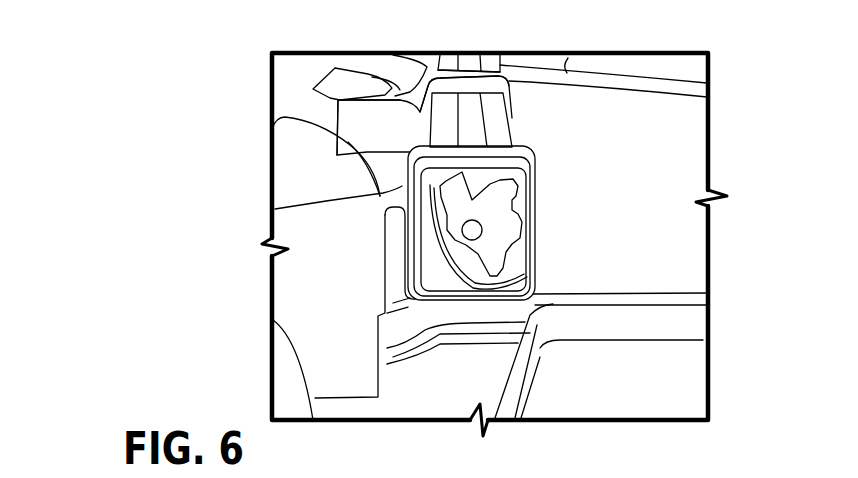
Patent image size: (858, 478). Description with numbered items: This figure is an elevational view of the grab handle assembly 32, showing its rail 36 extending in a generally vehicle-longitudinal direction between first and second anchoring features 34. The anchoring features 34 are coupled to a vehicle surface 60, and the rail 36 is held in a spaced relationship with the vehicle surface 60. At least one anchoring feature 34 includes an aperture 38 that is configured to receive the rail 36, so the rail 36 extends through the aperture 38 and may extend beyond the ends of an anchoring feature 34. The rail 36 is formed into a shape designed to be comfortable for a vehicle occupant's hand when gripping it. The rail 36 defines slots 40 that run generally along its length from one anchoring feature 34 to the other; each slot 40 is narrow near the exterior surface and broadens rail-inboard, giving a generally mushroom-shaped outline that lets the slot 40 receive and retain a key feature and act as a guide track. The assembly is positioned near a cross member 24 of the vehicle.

The cross member 24 is at (290, 189).
The grab handle assembly 32 is at (436, 54).
The anchoring feature 34 is at (378, 139).
The rail 36 is at (428, 117).
The aperture 38 is at (514, 102).
The slot 40 is at (458, 123).
The vehicle surface 60 is at (290, 390).